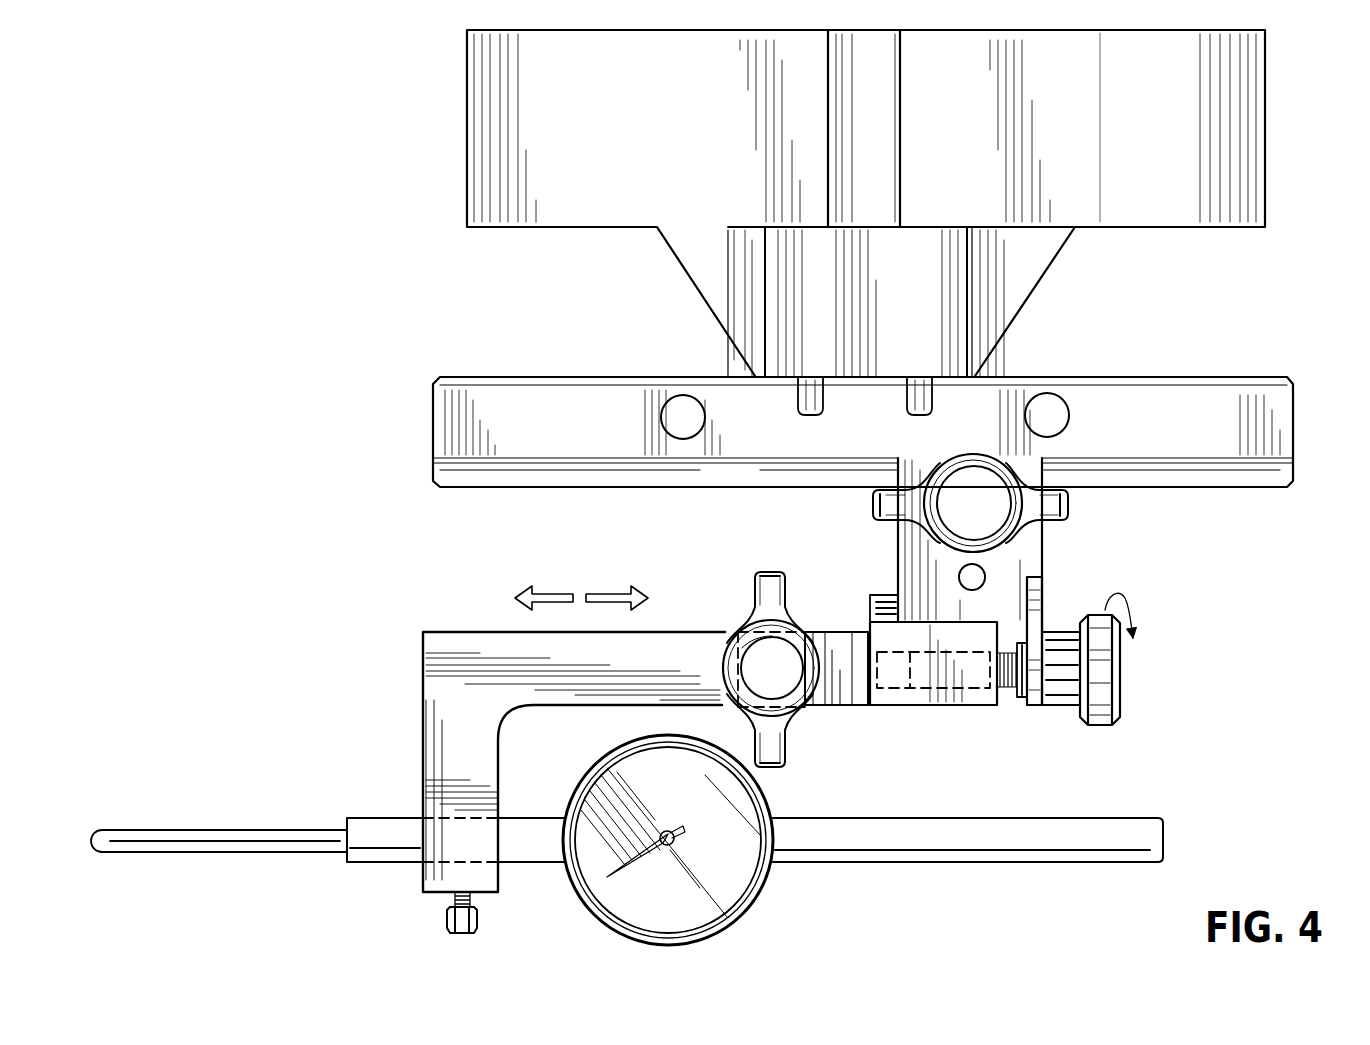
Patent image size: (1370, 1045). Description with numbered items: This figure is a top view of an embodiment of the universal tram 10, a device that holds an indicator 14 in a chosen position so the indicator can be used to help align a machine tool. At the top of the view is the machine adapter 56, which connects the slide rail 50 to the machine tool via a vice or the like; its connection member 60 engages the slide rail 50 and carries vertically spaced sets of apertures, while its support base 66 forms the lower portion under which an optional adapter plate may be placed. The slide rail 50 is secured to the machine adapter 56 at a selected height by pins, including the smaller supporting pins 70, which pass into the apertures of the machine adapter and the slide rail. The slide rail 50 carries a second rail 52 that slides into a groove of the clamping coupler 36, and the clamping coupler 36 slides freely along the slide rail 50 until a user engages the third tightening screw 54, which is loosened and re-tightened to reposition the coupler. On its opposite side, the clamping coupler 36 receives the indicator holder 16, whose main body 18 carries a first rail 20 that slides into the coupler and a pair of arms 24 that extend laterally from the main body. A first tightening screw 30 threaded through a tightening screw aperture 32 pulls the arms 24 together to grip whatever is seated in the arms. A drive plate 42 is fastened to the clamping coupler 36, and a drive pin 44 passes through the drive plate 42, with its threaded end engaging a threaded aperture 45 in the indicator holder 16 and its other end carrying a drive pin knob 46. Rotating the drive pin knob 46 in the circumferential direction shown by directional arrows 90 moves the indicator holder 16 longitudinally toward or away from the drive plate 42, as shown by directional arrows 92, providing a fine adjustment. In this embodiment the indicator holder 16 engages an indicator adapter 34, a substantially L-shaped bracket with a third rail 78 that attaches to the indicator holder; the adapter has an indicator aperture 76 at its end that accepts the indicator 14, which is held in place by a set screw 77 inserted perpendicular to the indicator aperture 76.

The universal tram 10 is at (210, 121).
The indicator 14 is at (760, 903).
The indicator holder 16 is at (860, 710).
The main body 18 is at (921, 706).
The first rail 20 is at (890, 597).
The arms 24 is at (815, 706).
The first tightening screw 30 is at (768, 581).
The tightening screw aperture 32 is at (977, 588).
The indicator adapter 34 is at (446, 630).
The clamping coupler 36 is at (1047, 549).
The drive plate 42 is at (1038, 605).
The drive pin 44 is at (1011, 690).
The threaded aperture 45 is at (878, 650).
The drive pin knob 46 is at (1120, 668).
The slide rail 50 is at (473, 374).
The second rail 52 is at (1217, 479).
The third tightening screw 54 is at (880, 506).
The machine adapter 56 is at (1272, 134).
The connection member 60 is at (919, 300).
The support base 66 is at (1116, 128).
The supporting pins 70 is at (805, 408).
The indicator aperture 76 is at (449, 812).
The set screw 77 is at (445, 920).
The third rail 78 is at (728, 648).
The directional arrows 90 is at (1100, 692).
The directional arrows 92 is at (556, 590).